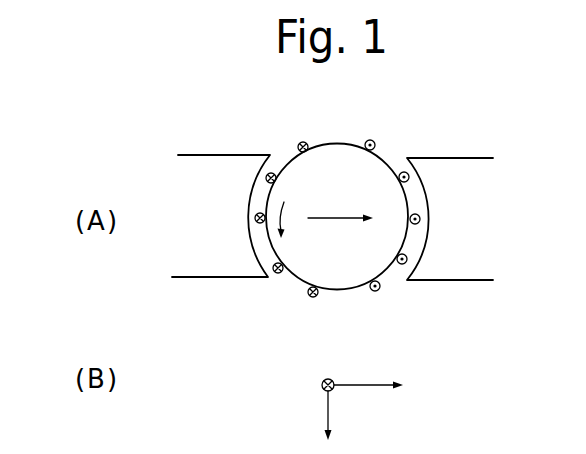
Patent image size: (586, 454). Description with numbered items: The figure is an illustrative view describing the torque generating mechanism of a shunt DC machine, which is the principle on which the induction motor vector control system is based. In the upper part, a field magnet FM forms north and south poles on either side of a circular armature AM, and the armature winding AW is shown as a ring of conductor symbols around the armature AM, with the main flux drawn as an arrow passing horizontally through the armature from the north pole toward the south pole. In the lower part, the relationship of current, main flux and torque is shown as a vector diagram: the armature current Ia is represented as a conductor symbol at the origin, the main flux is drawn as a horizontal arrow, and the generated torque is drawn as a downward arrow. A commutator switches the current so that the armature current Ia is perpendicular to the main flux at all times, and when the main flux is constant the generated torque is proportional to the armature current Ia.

The field magnet FM is at (218, 166).
The armature AM is at (338, 158).
The armature winding AW is at (303, 142).
The armature current Ia is at (332, 379).